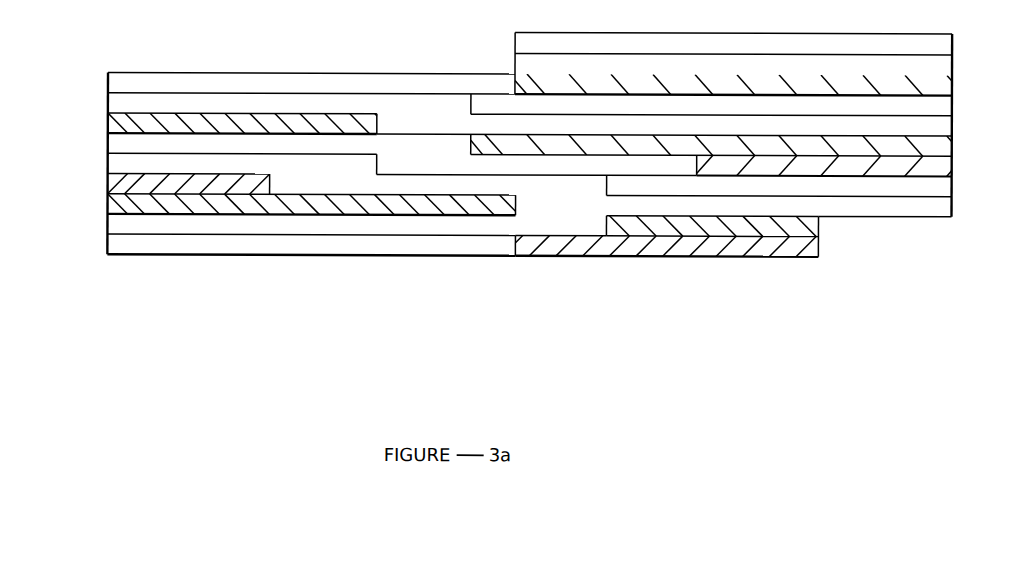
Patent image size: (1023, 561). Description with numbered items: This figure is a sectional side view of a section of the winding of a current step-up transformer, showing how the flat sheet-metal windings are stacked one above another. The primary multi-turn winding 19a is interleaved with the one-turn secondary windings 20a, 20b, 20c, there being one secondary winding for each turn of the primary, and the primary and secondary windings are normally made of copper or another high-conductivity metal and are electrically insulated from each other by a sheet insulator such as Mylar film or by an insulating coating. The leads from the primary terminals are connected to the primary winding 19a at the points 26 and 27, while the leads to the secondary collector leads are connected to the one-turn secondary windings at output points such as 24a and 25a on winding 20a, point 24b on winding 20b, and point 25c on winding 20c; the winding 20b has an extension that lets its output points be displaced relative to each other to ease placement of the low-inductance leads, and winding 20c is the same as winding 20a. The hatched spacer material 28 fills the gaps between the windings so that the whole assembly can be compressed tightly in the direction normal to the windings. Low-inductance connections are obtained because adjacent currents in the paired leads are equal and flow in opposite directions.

The primary multi-turn winding 19a is at (532, 156).
The one-turn secondary winding 20a is at (532, 147).
The one-turn secondary winding 20b is at (532, 137).
The one-turn secondary winding 20c is at (532, 204).
The output point 24a is at (734, 124).
The output point 24b is at (711, 105).
The output point 25a is at (446, 83).
The output point 25c is at (560, 227).
The primary input point 26 is at (733, 64).
The primary input point 27 is at (634, 236).
The spacer material 28 is at (528, 159).